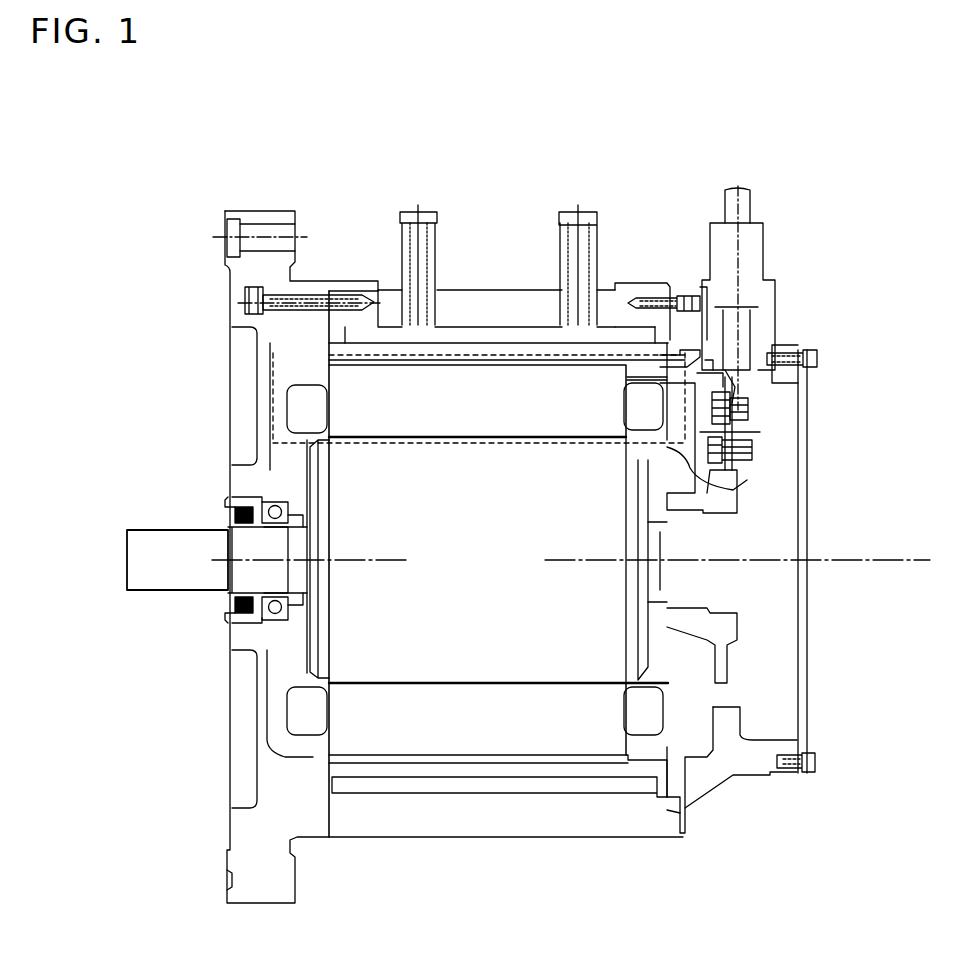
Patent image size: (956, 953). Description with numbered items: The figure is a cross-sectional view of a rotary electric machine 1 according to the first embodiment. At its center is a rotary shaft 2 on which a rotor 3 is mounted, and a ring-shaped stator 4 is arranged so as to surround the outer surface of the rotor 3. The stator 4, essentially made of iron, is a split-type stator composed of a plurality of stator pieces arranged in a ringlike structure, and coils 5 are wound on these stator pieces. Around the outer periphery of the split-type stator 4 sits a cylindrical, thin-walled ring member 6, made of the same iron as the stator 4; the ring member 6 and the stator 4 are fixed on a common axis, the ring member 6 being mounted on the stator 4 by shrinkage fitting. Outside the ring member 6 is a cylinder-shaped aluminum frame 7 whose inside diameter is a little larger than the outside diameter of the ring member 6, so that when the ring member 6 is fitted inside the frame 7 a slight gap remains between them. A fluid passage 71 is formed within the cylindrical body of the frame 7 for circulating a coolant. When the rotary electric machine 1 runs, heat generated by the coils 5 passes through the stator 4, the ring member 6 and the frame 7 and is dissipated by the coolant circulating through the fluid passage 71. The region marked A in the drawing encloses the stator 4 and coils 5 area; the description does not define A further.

The rotary electric machine 1 is at (459, 157).
The rotary shaft 2 is at (150, 562).
The rotor 3 is at (367, 483).
The stator 4 is at (360, 402).
The coils 5 is at (307, 410).
The ring member 6 is at (390, 357).
The frame 7 is at (482, 300).
The fluid passage 71 is at (610, 337).
The stator region A is at (270, 348).